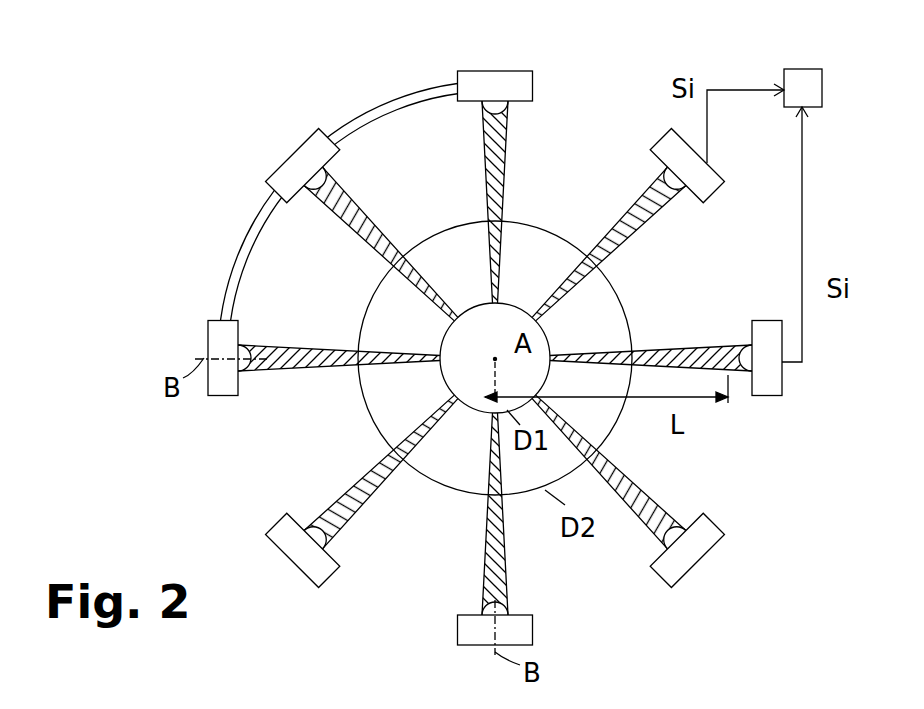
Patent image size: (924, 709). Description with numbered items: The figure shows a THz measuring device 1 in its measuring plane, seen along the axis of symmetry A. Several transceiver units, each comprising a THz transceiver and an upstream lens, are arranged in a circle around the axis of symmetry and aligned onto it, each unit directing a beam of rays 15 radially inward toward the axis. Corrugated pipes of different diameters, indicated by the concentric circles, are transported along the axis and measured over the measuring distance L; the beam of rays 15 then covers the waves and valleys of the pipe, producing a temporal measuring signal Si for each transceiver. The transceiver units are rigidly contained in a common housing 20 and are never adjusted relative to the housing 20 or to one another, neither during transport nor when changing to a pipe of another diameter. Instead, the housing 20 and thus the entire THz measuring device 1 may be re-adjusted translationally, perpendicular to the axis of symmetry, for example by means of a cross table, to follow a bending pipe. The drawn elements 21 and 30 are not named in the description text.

The THz measuring device 1 is at (188, 105).
The beam of rays 15 is at (495, 358).
The common housing 20 is at (358, 118).
The inner rail 21 is at (283, 263).
The controller 30 is at (797, 82).